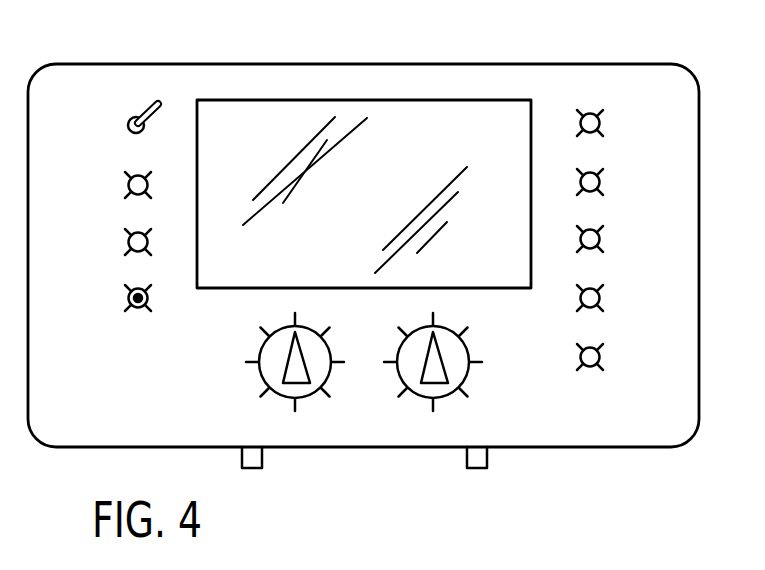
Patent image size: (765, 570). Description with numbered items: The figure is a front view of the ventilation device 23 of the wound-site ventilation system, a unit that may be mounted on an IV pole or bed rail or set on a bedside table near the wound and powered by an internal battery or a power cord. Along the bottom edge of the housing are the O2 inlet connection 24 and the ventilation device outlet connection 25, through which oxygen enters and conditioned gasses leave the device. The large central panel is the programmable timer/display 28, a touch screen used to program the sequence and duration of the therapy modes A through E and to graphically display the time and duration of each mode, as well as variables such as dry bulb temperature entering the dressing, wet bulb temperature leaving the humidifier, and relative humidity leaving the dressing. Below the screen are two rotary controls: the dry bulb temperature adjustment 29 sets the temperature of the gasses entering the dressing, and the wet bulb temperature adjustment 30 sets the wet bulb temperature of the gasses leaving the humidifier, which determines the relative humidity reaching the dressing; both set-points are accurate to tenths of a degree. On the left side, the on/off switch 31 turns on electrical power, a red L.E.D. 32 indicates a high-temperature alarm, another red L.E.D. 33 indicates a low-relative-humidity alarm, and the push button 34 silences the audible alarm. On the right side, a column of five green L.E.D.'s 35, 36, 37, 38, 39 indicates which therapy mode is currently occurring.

The ventilation device 23 is at (700, 254).
The O2 inlet connection 24 is at (263, 458).
The ventilation device outlet connection 25 is at (465, 458).
The programmable timer/display 28 is at (363, 98).
The dry bulb temperature adjustment 29 is at (263, 377).
The wet bulb temperature adjustment 30 is at (468, 378).
The on/off switch 31 is at (128, 123).
The red L.E.D. 32 is at (128, 185).
The red L.E.D. 33 is at (128, 243).
The push button 34 is at (128, 300).
The green L.E.D. 35 is at (600, 124).
The green L.E.D. 36 is at (600, 183).
The green L.E.D. 37 is at (600, 240).
The green L.E.D. 38 is at (600, 299).
The green L.E.D. 39 is at (600, 358).